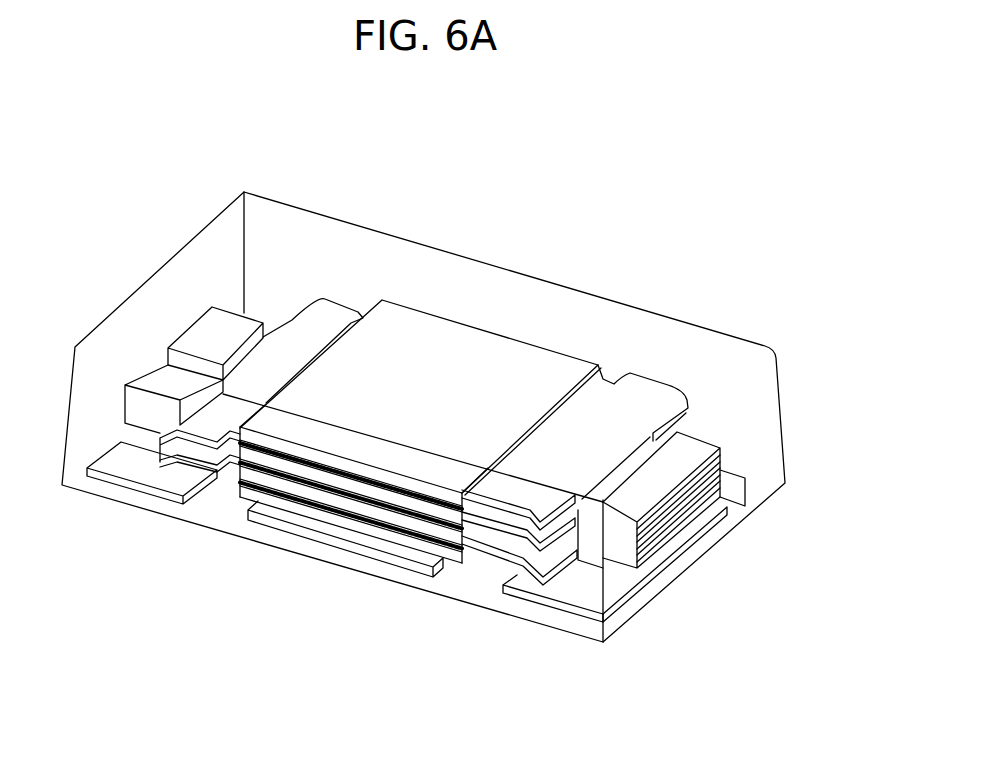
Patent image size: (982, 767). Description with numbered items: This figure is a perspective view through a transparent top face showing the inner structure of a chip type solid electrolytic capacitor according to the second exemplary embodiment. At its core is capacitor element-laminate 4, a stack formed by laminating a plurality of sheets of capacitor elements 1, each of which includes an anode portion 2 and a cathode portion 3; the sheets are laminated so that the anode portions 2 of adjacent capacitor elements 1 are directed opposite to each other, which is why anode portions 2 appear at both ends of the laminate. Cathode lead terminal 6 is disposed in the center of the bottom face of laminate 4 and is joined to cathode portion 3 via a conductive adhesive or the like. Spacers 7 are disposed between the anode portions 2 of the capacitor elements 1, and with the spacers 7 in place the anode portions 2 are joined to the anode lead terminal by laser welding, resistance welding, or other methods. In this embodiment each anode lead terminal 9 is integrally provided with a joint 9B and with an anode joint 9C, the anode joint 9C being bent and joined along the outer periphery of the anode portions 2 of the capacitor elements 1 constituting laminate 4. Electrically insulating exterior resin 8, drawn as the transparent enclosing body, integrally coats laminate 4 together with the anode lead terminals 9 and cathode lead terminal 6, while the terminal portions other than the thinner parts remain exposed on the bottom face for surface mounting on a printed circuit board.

The capacitor element 1 is at (647, 240).
The anode portion 2 is at (328, 320).
The cathode portion 3 is at (477, 355).
The capacitor element-laminate 4 is at (681, 204).
The cathode lead terminal 6 is at (353, 537).
The spacer 7 is at (722, 470).
The exterior resin 8 is at (760, 417).
The anode lead terminal 9 is at (153, 470).
The joint 9B is at (672, 545).
The anode joint 9C is at (172, 365).